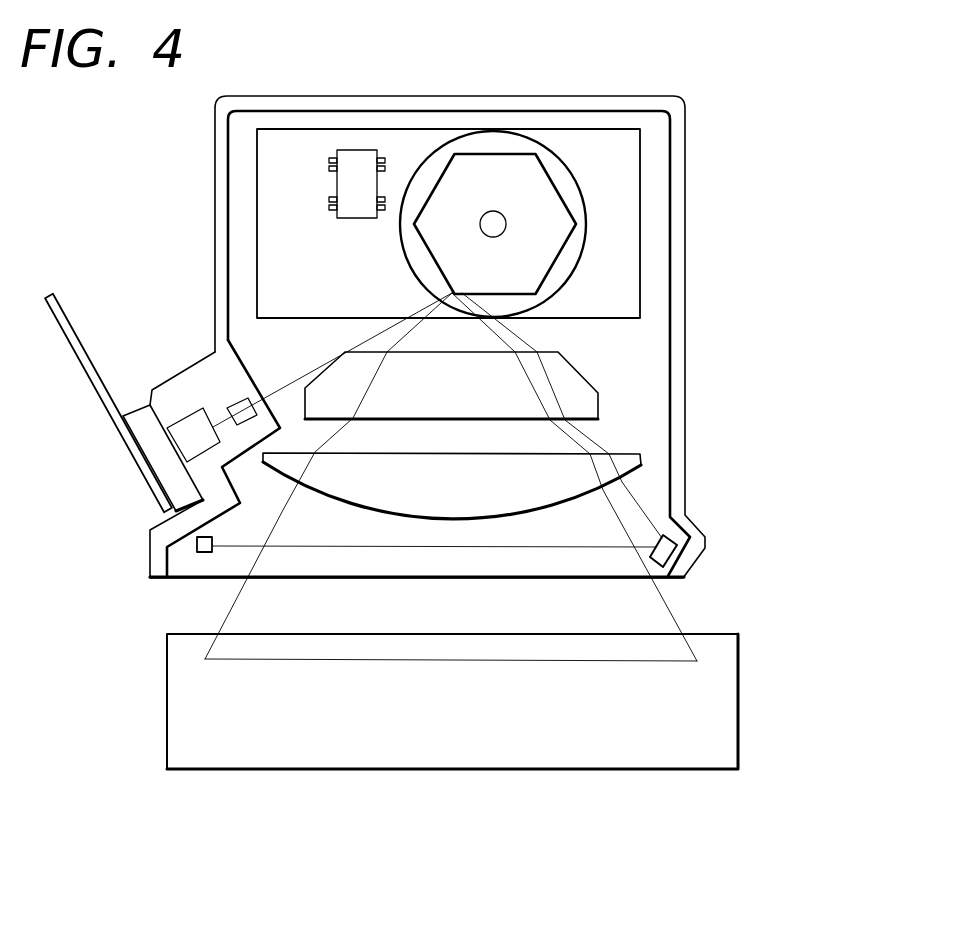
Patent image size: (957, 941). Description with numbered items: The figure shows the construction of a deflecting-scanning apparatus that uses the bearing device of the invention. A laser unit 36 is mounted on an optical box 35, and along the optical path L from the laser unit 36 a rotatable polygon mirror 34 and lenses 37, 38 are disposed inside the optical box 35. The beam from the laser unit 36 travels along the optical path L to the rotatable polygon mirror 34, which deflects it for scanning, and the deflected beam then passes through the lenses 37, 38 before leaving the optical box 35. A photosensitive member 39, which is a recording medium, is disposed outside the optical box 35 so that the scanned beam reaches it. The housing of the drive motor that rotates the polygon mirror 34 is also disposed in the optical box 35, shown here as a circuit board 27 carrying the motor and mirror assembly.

The optical box 35 is at (587, 102).
The circuit board 27 is at (625, 163).
The rotatable polygon mirror 34 is at (542, 207).
The lens 37 is at (575, 387).
The lens 38 is at (636, 460).
The laser unit 36 is at (163, 453).
The photosensitive member 39 is at (720, 687).
The optical path L is at (668, 603).